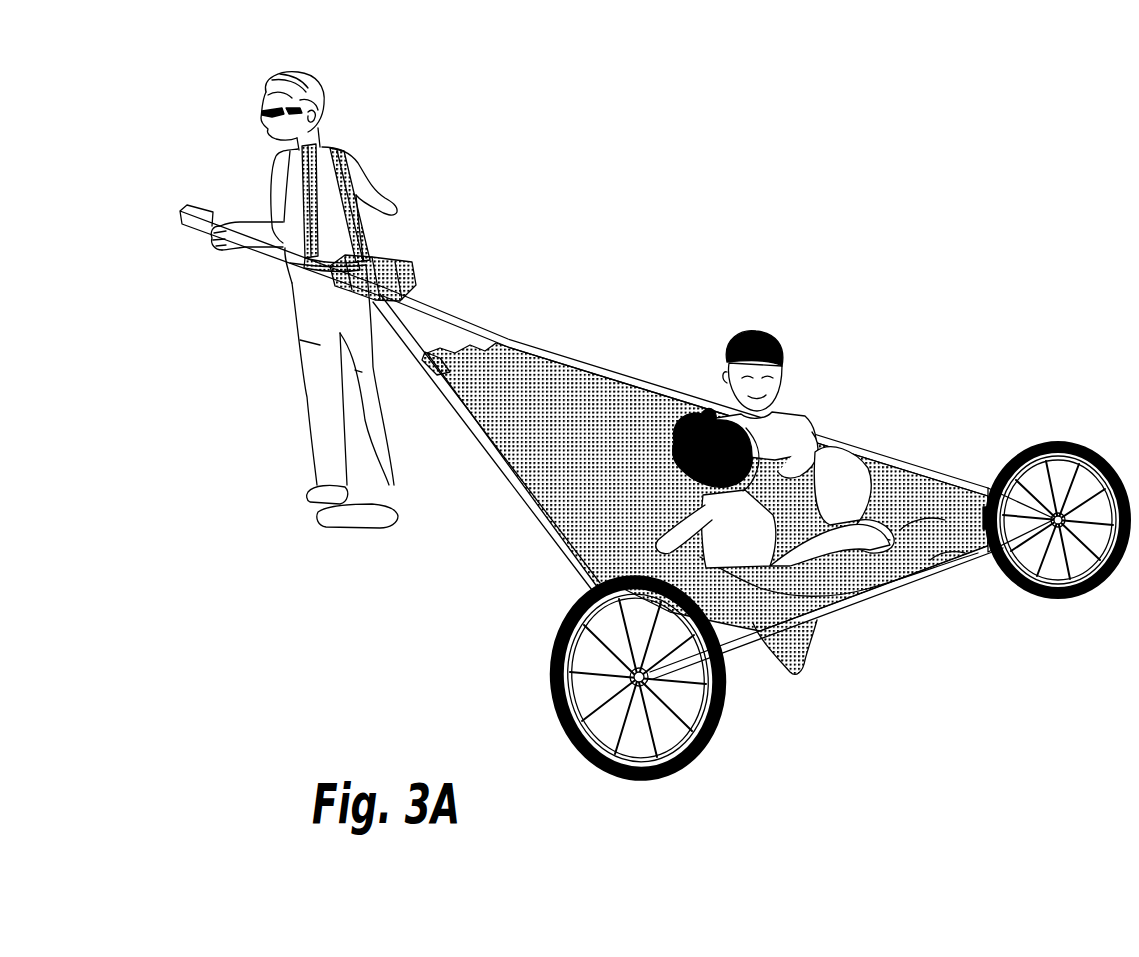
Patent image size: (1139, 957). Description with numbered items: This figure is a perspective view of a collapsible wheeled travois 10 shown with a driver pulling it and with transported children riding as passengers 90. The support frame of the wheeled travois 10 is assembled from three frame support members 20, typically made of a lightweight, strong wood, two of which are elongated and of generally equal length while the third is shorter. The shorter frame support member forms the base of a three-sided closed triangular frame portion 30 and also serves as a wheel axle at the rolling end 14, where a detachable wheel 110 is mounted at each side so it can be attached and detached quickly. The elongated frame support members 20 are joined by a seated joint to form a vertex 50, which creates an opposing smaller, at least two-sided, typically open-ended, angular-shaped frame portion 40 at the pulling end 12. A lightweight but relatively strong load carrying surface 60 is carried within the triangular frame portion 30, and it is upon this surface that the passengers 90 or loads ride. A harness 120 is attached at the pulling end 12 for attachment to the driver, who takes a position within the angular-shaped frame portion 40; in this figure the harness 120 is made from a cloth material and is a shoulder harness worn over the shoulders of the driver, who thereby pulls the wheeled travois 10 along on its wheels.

The wheeled travois 10 is at (480, 573).
The pulling end 12 is at (220, 155).
The rolling end 14 is at (856, 636).
The frame support members 20 is at (410, 338).
The three-sided closed triangular frame portion 30 is at (580, 390).
The angular-shaped frame portion 40 is at (332, 259).
The vertex 50 is at (393, 310).
The load carrying surface 60 is at (640, 507).
The passengers 90 is at (783, 403).
The detachable wheel 110 is at (562, 679).
The harness 120 is at (348, 234).